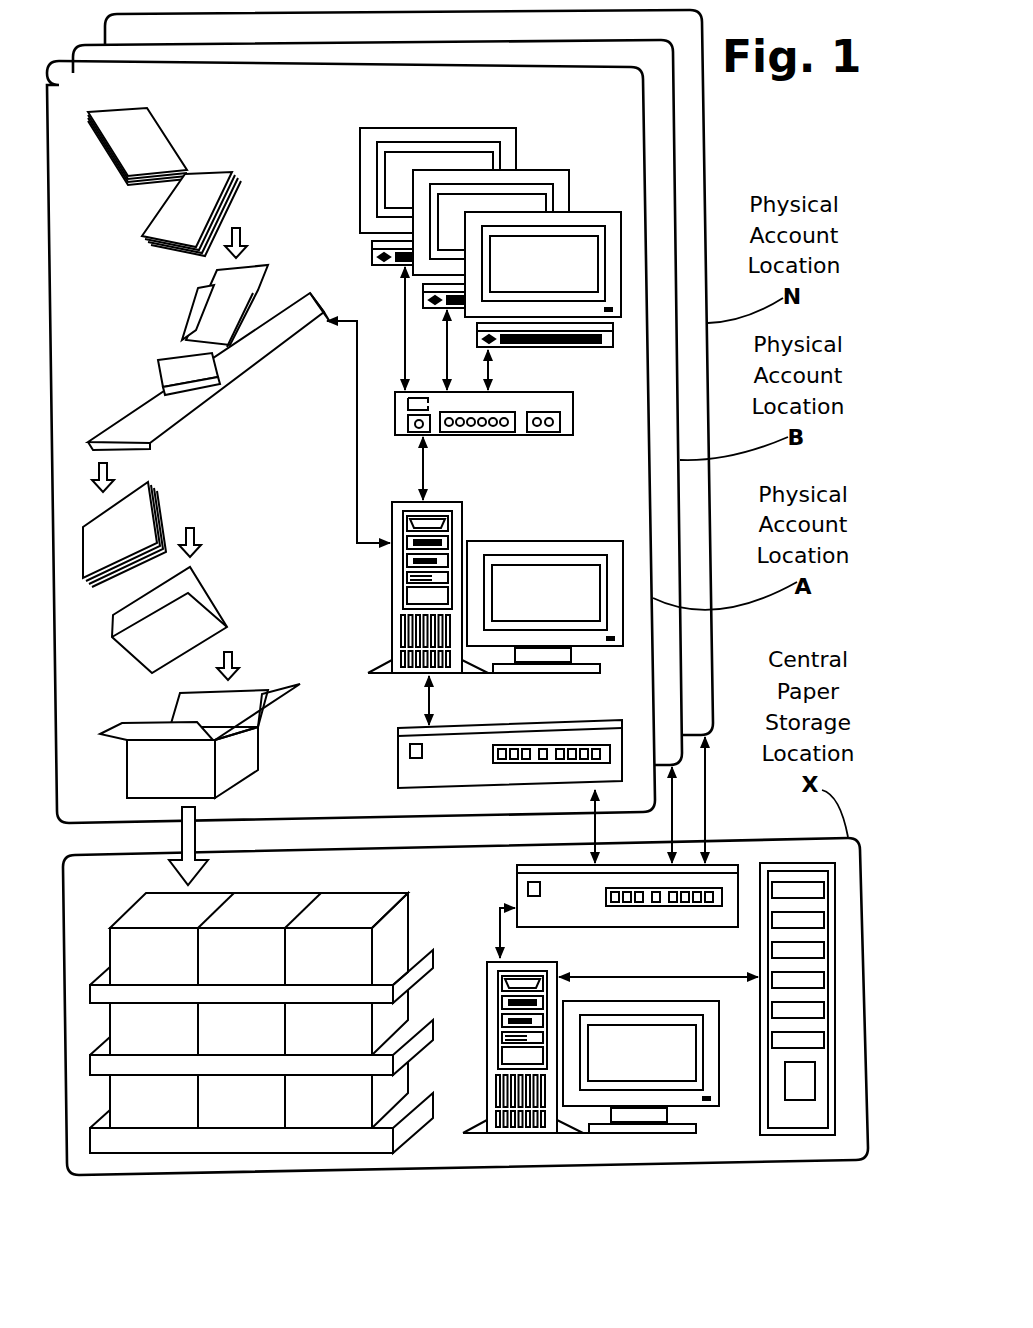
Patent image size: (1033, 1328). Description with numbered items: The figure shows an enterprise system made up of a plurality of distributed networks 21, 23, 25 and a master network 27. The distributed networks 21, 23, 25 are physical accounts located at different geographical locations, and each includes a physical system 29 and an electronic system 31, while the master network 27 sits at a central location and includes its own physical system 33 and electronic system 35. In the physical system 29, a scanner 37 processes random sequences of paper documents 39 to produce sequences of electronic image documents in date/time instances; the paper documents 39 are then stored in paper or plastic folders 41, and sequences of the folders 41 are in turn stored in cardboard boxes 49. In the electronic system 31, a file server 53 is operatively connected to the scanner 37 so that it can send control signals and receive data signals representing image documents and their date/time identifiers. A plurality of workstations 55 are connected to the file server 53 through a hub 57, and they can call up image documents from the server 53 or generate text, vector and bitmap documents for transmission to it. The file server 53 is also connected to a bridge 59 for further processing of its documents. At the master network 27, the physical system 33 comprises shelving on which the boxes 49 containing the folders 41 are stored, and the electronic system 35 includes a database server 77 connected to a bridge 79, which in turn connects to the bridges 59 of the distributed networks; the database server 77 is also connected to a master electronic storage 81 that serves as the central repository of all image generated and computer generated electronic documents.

The distributed network 21 is at (645, 147).
The distributed network 23 is at (676, 145).
The distributed network 25 is at (706, 180).
The master network 27 is at (800, 836).
The physical system 29 is at (178, 265).
The electronic system 31 is at (533, 442).
The physical system 33 is at (365, 882).
The electronic system 35 is at (472, 985).
The scanner 37 is at (273, 373).
The paper documents 39 is at (170, 150).
The folders 41 is at (207, 590).
The cardboard boxes 49 is at (260, 732).
The file server 53 is at (392, 608).
The workstations 55 is at (360, 200).
The hub 57 is at (575, 410).
The bridge 59 is at (398, 757).
The database server 77 is at (523, 962).
The bridge 79 is at (647, 927).
The master electronic storage 81 is at (762, 1032).